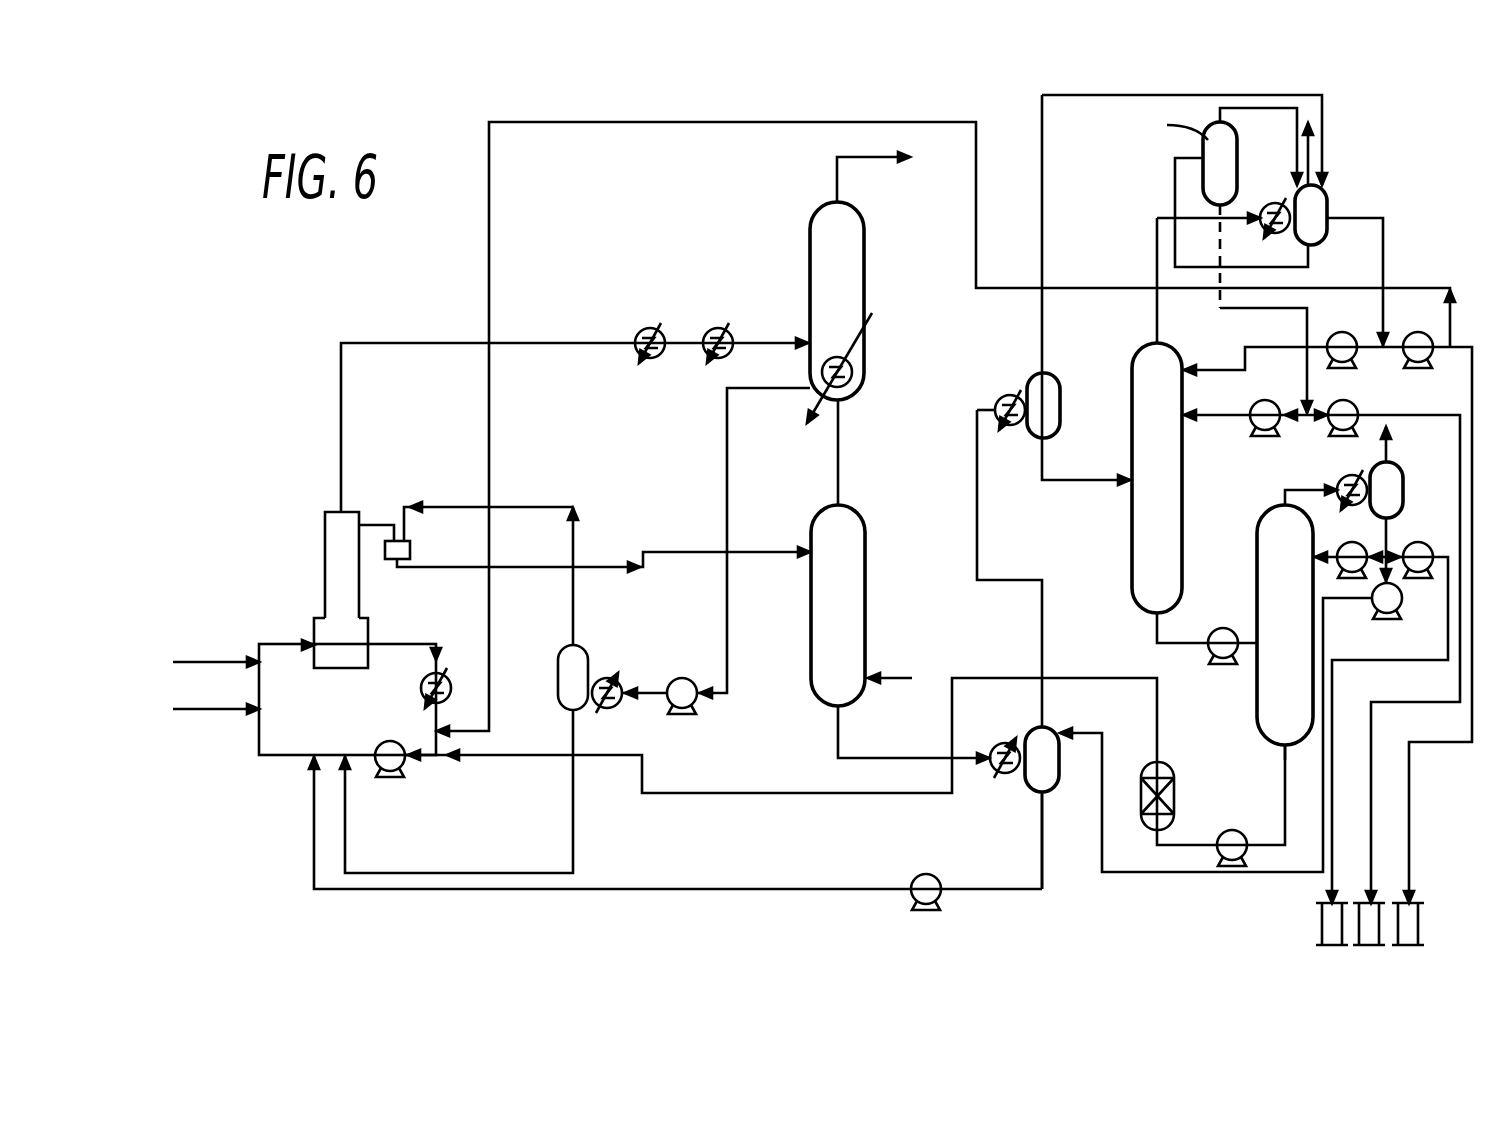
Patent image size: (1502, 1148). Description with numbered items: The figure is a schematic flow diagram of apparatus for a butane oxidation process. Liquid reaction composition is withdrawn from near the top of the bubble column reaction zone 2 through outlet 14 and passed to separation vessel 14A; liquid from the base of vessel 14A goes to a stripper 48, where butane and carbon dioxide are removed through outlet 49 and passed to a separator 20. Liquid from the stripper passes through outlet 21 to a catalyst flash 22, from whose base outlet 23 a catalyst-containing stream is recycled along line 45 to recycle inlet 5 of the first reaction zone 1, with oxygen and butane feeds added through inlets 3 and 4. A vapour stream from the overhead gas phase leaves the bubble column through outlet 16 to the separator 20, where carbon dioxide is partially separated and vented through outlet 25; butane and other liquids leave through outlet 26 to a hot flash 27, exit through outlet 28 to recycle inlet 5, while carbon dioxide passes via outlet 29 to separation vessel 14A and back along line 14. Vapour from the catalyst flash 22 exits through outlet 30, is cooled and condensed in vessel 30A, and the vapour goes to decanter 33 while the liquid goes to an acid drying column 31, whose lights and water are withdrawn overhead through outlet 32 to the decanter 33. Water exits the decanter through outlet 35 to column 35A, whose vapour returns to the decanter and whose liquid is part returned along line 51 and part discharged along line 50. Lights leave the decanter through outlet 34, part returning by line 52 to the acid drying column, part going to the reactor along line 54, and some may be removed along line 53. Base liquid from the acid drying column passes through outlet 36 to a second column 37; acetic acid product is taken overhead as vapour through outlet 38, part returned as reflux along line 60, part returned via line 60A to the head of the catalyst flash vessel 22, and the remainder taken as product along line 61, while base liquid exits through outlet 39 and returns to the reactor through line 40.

The first reaction zone 1 is at (346, 670).
The bubble column reaction zone 2 is at (325, 567).
The oxygen inlet 3 is at (214, 661).
The butane inlet 4 is at (207, 715).
The recycle inlet 5 is at (258, 745).
The outlet 14 is at (372, 522).
The separation vessel 14A is at (410, 548).
The outlet 16 is at (340, 512).
The separator 20 is at (820, 262).
The outlet 21 is at (836, 706).
The catalyst flash 22 is at (1060, 730).
The outlet 23 is at (1043, 793).
The outlet 25 is at (835, 200).
The outlet 26 is at (818, 392).
The hot flash 27 is at (588, 658).
The outlet 28 is at (572, 711).
The outlet 29 is at (577, 650).
The outlet 30 is at (1042, 726).
The vessel 30A is at (1048, 410).
The acid drying column 31 is at (1150, 447).
The outlet 32 is at (1155, 343).
The decanter 33 is at (1317, 200).
The outlet 34 is at (1327, 215).
The outlet 35 is at (1310, 247).
The column 35A is at (1225, 178).
The outlet 36 is at (1155, 614).
The second column 37 is at (1277, 593).
The outlet 38 is at (1280, 507).
The outlet 39 is at (1283, 747).
The line 40 is at (610, 757).
The line 45 is at (701, 891).
The stripper 48 is at (823, 522).
The outlet 49 is at (842, 505).
The line 50 is at (1371, 834).
The line 51 is at (1217, 420).
The line 52 is at (1213, 370).
The line 53 is at (1410, 783).
The line 54 is at (489, 702).
The line 60 is at (1328, 560).
The line 60A is at (1170, 874).
The line 61 is at (1325, 878).